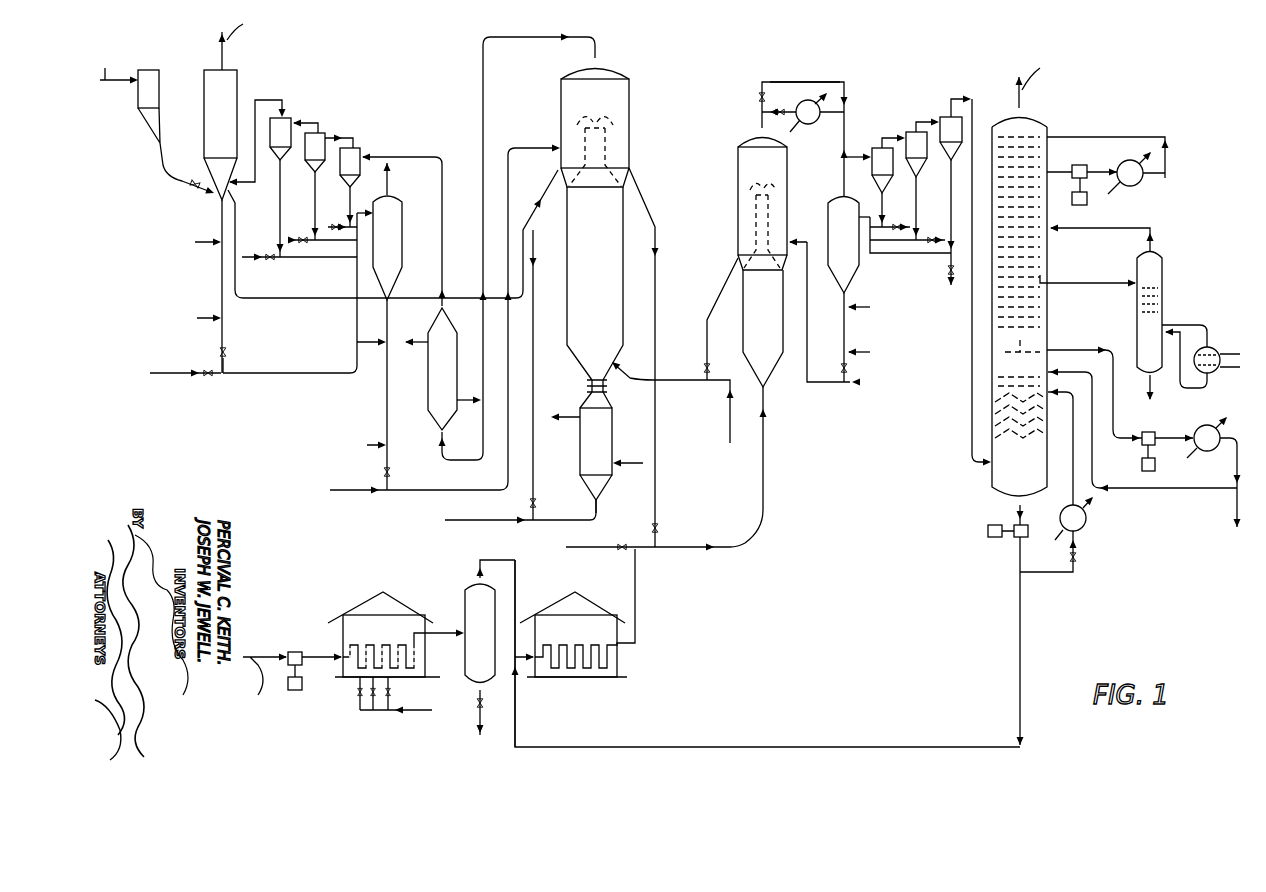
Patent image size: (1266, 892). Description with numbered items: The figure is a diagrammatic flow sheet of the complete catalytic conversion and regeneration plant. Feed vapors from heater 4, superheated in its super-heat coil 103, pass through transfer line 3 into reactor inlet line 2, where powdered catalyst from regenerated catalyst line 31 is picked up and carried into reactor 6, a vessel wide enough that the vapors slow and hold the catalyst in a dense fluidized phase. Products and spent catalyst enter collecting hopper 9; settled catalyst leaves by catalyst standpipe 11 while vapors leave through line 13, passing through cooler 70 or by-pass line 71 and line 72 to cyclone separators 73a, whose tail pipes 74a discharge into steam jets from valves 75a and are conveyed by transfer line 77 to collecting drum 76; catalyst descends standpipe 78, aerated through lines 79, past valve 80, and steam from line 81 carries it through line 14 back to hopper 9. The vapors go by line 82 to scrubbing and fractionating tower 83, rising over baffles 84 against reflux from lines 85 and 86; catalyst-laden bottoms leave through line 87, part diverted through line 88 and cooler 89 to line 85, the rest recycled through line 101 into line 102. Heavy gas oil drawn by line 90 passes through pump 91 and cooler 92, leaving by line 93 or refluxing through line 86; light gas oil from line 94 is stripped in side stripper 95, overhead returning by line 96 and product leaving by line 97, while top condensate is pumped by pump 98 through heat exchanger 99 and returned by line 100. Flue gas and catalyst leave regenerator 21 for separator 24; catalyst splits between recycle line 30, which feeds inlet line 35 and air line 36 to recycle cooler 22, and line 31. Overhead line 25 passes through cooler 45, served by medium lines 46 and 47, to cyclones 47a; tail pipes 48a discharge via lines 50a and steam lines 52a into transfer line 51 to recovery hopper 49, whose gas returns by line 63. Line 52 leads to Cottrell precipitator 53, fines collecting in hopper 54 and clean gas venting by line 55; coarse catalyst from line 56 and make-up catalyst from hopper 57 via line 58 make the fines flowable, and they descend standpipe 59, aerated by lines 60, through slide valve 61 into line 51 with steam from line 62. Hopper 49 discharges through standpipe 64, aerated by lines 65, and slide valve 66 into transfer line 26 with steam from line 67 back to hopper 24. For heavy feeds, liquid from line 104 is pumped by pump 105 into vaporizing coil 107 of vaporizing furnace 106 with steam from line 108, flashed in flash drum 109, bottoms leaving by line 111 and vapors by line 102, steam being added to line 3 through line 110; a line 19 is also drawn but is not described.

The reactor inlet line 2 is at (766, 468).
The transfer line 3 is at (652, 548).
The heater 4 is at (595, 596).
The reactor 6 is at (784, 303).
The collecting hopper 9 is at (789, 163).
The catalyst standpipe 11 is at (729, 277).
The line 13 is at (760, 123).
The line 14 is at (807, 242).
The catalyst transfer line 19 is at (676, 381).
The regenerator 21 is at (627, 301).
The catalyst recycle cooler 22 is at (606, 428).
The separator 24 is at (632, 98).
The line 25 is at (575, 37).
The transfer line 26 is at (440, 490).
The regenerated catalyst recycle line 30 is at (536, 300).
The regenerated catalyst line 31 is at (652, 212).
The inlet line 35 is at (598, 508).
The line 36 is at (500, 520).
The cooler 45 is at (428, 392).
The line 46 is at (442, 152).
The line 47 is at (408, 340).
The cyclone separator 47a is at (350, 148).
The tail pipe 48a is at (350, 194).
The regenerated catalyst recovery hopper 49 is at (403, 206).
The line 50a is at (338, 231).
The transfer line 51 is at (356, 345).
The line 52 is at (258, 100).
The line 52a is at (255, 257).
The Cottrell precipitator 53 is at (238, 75).
The bottom hopper 54 is at (207, 165).
The line 55 is at (224, 62).
The line 56 is at (248, 298).
The hopper 57 is at (160, 88).
The line 58 is at (178, 180).
The outlet standpipe 59 is at (226, 342).
The lines 60 is at (197, 243).
The slide valve 61 is at (226, 365).
The line 62 is at (168, 376).
The line 63 is at (389, 177).
The standpipe 64 is at (387, 424).
The lines 65 is at (370, 343).
The slide valve 66 is at (392, 472).
The line 67 is at (348, 491).
The cooler 70 is at (803, 126).
The by-pass line 71 is at (790, 82).
The line 72 is at (856, 157).
The cyclone separator 73a is at (947, 117).
The tail pipe 74a is at (948, 250).
The valve 75a is at (933, 236).
The collecting drum 76 is at (862, 263).
The transfer line 77 is at (870, 216).
The catalyst standpipe 78 is at (860, 360).
The lines 79 is at (858, 321).
The valve 80 is at (841, 368).
The line 81 is at (855, 384).
The line 82 is at (990, 422).
The scrubbing and fractionating tower 83 is at (1046, 122).
The baffles 84 is at (1033, 430).
The line 85 is at (1050, 392).
The line 86 is at (1080, 372).
The line 87 is at (1018, 508).
The line 88 is at (1062, 573).
The cooler 89 is at (1088, 522).
The side draw-off line 90 is at (1072, 350).
The pump 91 is at (1156, 466).
The cooler 92 is at (1207, 494).
The line 93 is at (1236, 503).
The side draw-off line 94 is at (1078, 283).
The side stripper 95 is at (1164, 268).
The line 96 is at (1125, 228).
The line 97 is at (1056, 170).
The pump 98 is at (1082, 205).
The heat exchanger 99 is at (1143, 180).
The line 100 is at (1120, 137).
The line 101 is at (1022, 630).
The line 102 is at (517, 585).
The super-heat coil 103 is at (612, 660).
The line 104 is at (250, 655).
The pump 105 is at (300, 652).
The vaporizing furnace 106 is at (400, 598).
The vaporizing coil 107 is at (416, 678).
The line 108 is at (380, 711).
The flash drum 109 is at (478, 578).
The line 110 is at (566, 547).
The line 111 is at (483, 695).